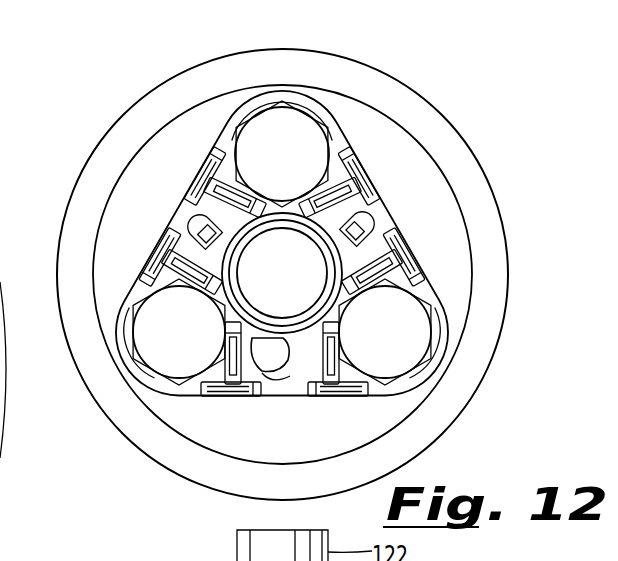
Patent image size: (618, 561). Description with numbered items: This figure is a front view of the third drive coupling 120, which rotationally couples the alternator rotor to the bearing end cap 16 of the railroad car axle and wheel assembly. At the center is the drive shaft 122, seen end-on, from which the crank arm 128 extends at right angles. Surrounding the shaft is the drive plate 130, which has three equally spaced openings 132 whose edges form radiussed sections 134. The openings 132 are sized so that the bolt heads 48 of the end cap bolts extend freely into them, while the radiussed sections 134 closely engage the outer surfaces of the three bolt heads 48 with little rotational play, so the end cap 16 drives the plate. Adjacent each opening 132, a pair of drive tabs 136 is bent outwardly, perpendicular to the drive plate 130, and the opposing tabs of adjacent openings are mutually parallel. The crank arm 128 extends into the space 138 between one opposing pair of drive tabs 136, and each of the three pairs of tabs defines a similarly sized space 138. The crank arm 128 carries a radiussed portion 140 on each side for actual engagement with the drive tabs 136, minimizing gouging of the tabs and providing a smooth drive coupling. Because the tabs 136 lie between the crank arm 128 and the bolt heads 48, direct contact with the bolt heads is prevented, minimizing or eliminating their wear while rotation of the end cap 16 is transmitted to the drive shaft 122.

The bearing end cap 16 is at (364, 70).
The bolt heads 48 is at (265, 177).
The third drive coupling 120 is at (472, 110).
The drive shaft 122 is at (300, 272).
The crank arm 128 is at (262, 355).
The drive plate 130 is at (436, 258).
The openings 132 is at (336, 157).
The radiussed sections 134 is at (262, 97).
The drive tabs 136 is at (352, 198).
The space 138 is at (387, 217).
The radiussed portion 140 is at (228, 355).